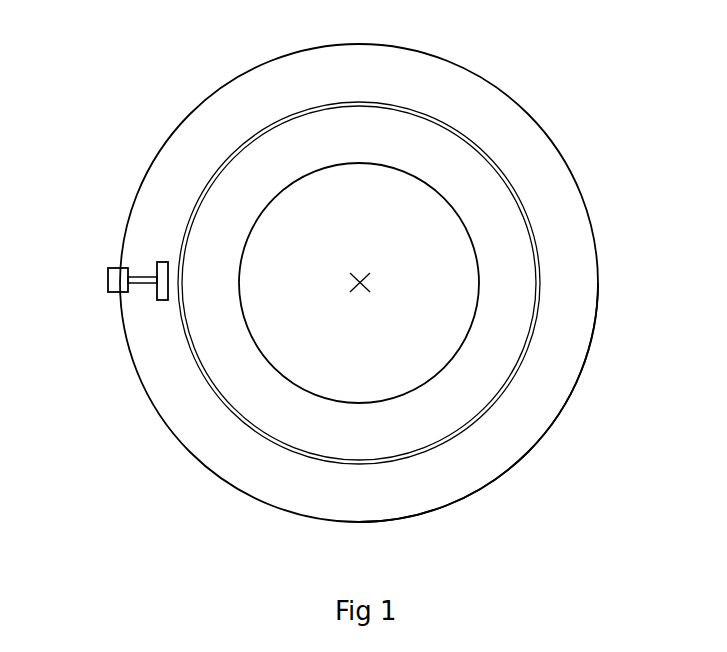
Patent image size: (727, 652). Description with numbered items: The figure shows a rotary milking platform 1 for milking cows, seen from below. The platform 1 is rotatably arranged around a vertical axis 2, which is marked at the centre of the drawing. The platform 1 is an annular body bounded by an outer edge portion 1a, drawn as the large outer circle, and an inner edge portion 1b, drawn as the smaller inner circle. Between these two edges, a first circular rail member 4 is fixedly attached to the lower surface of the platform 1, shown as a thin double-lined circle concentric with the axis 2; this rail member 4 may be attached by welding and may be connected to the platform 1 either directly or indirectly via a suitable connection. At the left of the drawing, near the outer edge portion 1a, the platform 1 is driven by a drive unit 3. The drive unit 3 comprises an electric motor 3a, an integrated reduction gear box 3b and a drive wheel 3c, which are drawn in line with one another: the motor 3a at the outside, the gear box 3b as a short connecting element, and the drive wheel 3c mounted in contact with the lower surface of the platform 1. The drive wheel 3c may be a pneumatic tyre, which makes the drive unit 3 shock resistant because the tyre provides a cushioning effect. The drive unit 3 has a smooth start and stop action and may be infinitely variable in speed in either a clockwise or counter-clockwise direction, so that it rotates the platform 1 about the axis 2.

The rotary milking platform 1 is at (268, 85).
The outer edge portion 1a is at (588, 355).
The inner edge portion 1b is at (467, 330).
The vertical axis 2 is at (360, 273).
The drive unit 3 is at (103, 287).
The electric motor 3a is at (110, 283).
The integrated reduction gear box 3b is at (122, 283).
The drive wheel 3c is at (163, 281).
The first circular rail member 4 is at (495, 160).